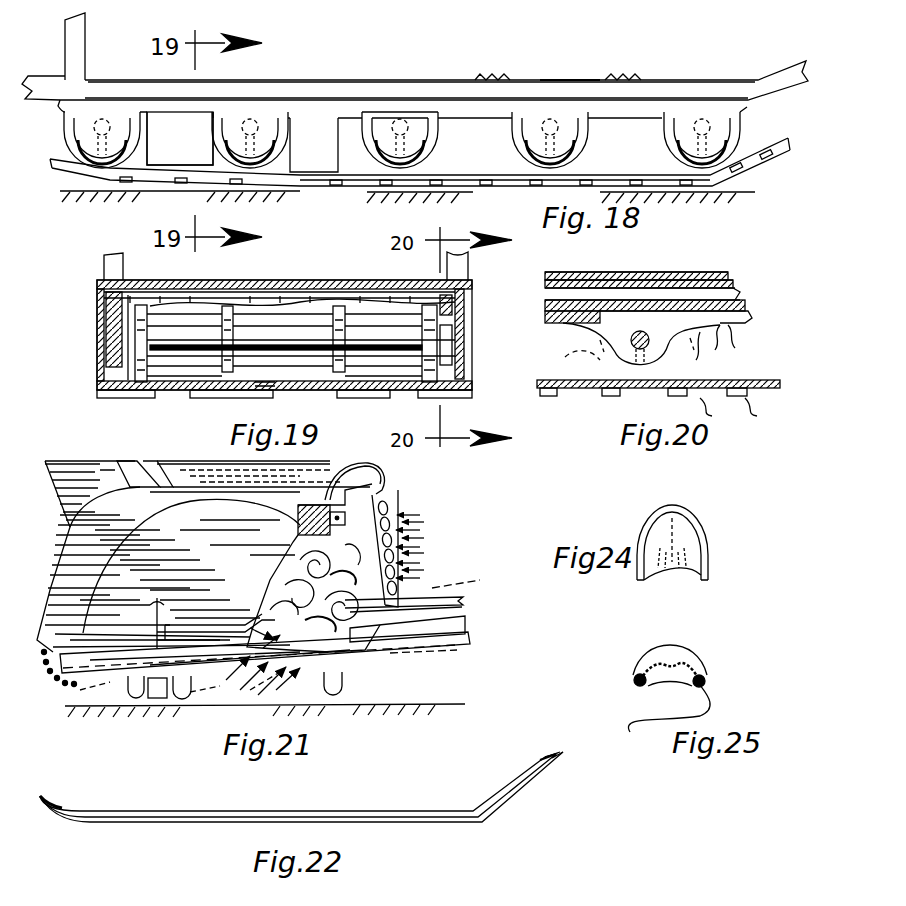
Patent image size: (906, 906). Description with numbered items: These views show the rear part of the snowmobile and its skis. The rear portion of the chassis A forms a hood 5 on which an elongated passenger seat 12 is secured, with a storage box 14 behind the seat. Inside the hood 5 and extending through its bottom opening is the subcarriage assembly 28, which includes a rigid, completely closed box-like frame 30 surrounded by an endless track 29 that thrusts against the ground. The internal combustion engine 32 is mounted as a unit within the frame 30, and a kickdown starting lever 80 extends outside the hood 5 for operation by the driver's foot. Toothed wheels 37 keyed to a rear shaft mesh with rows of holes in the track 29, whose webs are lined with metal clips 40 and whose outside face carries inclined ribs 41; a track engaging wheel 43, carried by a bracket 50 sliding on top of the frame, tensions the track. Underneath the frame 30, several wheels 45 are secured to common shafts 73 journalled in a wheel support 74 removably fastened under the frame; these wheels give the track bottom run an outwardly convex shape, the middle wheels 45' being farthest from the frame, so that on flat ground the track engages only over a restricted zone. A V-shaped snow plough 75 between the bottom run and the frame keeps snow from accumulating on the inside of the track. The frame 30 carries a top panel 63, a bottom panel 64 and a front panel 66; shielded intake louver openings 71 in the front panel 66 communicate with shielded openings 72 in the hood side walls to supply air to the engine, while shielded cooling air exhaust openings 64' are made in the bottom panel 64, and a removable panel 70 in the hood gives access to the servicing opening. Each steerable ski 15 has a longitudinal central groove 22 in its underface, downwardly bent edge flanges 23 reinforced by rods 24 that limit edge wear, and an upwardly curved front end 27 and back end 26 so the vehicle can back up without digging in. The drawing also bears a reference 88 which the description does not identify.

In FIG. 21, the hood 5 is at (118, 492).
In FIG. 21, the passenger seat 12 is at (296, 465).
In FIG. 21, the storage box 14 is at (75, 475).
In FIG. 24, the ski 15 is at (714, 551).
In FIG. 25, the ski 15 is at (710, 663).
In FIG. 22, the ski 15 is at (475, 825).
In FIG. 24, the central groove 22 is at (677, 568).
In FIG. 25, the central groove 22 is at (662, 677).
In FIG. 24, the flanges 23 is at (640, 582).
In FIG. 25, the flanges 23 is at (633, 678).
In FIG. 22, the flanges 23 is at (388, 813).
In FIG. 24, the rods 24 is at (648, 582).
In FIG. 25, the rods 24 is at (665, 716).
In FIG. 22, the rods 24 is at (428, 818).
In FIG. 25, the back end of ski 26 is at (668, 655).
In FIG. 22, the back end of ski 26 is at (58, 803).
In FIG. 24, the front end of ski 27 is at (675, 512).
In FIG. 22, the front end of ski 27 is at (542, 786).
In FIG. 18, the subcarriage assembly 28 is at (359, 77).
In FIG. 19, the subcarriage assembly 28 is at (479, 354).
In FIG. 20, the subcarriage assembly 28 is at (724, 267).
In FIG. 21, the subcarriage assembly 28 is at (368, 660).
In FIG. 18, the endless track 29 is at (700, 173).
In FIG. 19, the endless track 29 is at (290, 390).
In FIG. 20, the endless track 29 is at (658, 398).
In FIG. 21, the endless track 29 is at (355, 728).
In FIG. 18, the box-like frame 30 is at (675, 93).
In FIG. 19, the box-like frame 30 is at (467, 292).
In FIG. 20, the box-like frame 30 is at (680, 272).
In FIG. 21, the box-like frame 30 is at (220, 662).
In FIG. 21, the internal combustion engine 32 is at (427, 615).
In FIG. 21, the toothed wheels 37 is at (55, 683).
In FIG. 19, the metal sleeve or clip 40 is at (403, 396).
In FIG. 19, the ribs 41 is at (223, 400).
In FIG. 21, the track engaging wheel 43 is at (376, 492).
In FIG. 18, the wheels 45 is at (626, 140).
In FIG. 19, the wheels 45 is at (320, 404).
In FIG. 21, the wheels 45 is at (332, 710).
In FIG. 18, the middle wheels 45' is at (282, 143).
In FIG. 21, the bracket 50 is at (337, 480).
In FIG. 21, the top panel 63 is at (283, 570).
In FIG. 18, the bottom panel 64 is at (574, 58).
In FIG. 19, the bottom panel 64 is at (270, 277).
In FIG. 20, the bottom panel 64 is at (636, 251).
In FIG. 18, the cooling air exhaust openings 64' is at (446, 110).
In FIG. 21, the front panel 66 is at (405, 605).
In FIG. 21, the removable panel 70 is at (180, 540).
In FIG. 21, the intake louver openings 71 is at (388, 517).
In FIG. 21, the shielded openings 72 is at (413, 568).
In FIG. 18, the shaft 73 is at (443, 128).
In FIG. 19, the shaft 73 is at (268, 342).
In FIG. 18, the wheel support 74 is at (448, 112).
In FIG. 19, the wheel support 74 is at (460, 333).
In FIG. 18, the snow plough arrangement 75 is at (312, 132).
In FIG. 21, the snow plough arrangement 75 is at (162, 690).
In FIG. 21, the kickdown starting lever 80 is at (222, 622).
In FIG. 21, the bracket 88 is at (165, 630).
In FIG. 21, the chassis A is at (462, 613).